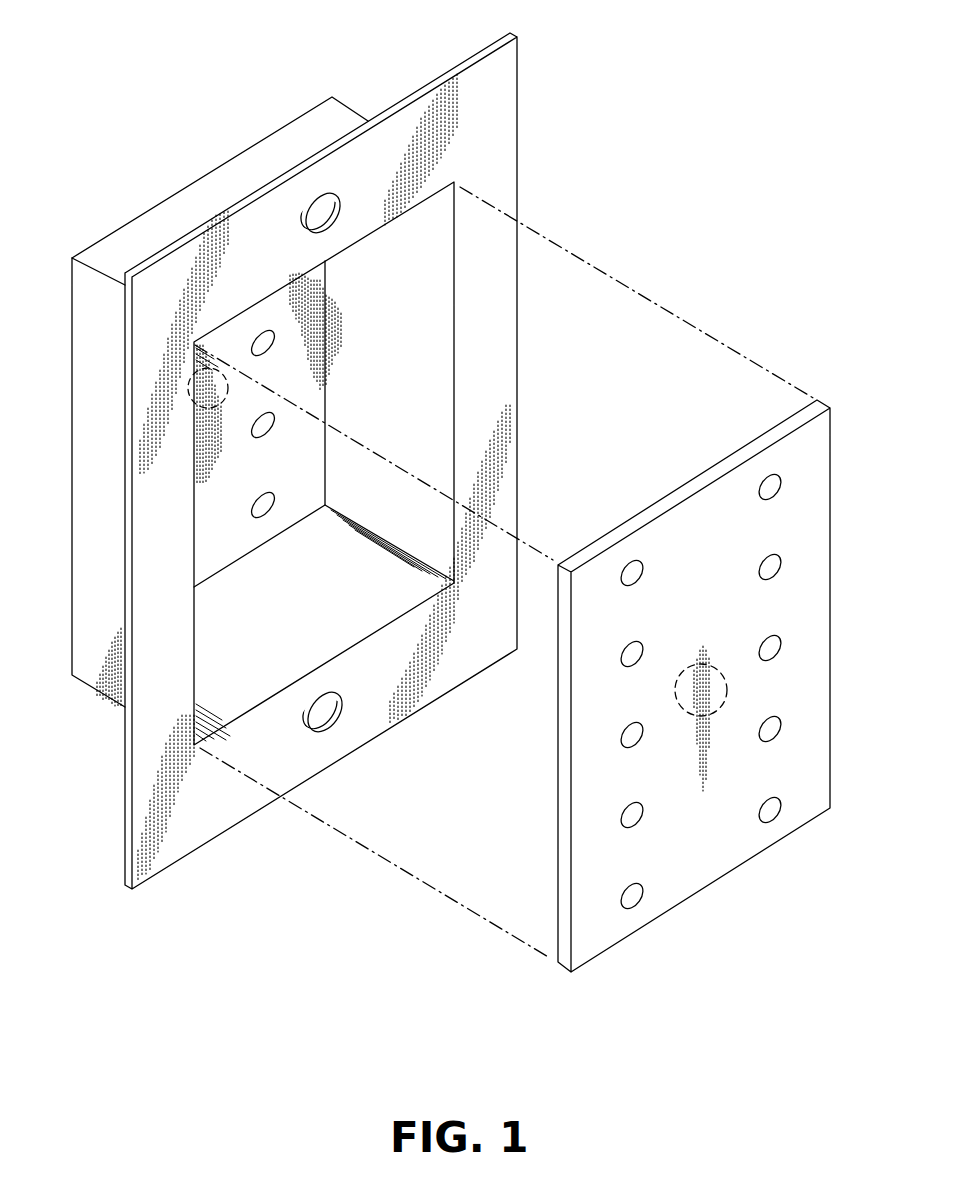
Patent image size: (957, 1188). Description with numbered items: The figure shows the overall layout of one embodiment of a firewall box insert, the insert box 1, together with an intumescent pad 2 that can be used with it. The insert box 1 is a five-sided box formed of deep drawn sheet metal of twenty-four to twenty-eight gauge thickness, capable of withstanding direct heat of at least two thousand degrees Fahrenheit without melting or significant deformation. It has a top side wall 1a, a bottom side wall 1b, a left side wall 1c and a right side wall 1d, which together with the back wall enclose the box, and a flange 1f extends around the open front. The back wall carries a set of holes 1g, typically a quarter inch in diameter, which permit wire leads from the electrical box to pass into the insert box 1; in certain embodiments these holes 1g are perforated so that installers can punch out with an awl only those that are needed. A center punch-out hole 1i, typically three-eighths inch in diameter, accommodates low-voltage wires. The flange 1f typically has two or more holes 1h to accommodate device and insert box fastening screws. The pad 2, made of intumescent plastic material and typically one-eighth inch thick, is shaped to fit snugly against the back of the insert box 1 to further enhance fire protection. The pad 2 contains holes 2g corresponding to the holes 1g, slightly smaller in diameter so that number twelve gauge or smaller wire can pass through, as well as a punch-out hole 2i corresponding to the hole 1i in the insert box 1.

The insert box 1 is at (493, 168).
The top side wall 1a is at (232, 202).
The bottom side wall 1b is at (297, 624).
The left side wall 1c is at (112, 524).
The right side wall 1d is at (414, 359).
The flange 1f is at (386, 694).
The holes 1g is at (272, 342).
The holes 1h is at (318, 208).
The center punch-out hole 1i is at (212, 352).
The pad 2 is at (742, 535).
The holes 2g is at (772, 731).
The punch-out hole 2i is at (695, 672).